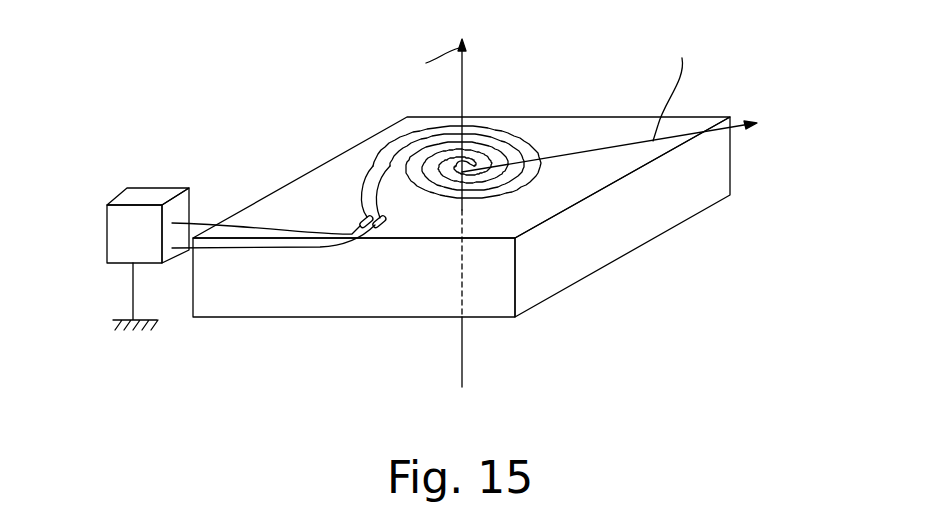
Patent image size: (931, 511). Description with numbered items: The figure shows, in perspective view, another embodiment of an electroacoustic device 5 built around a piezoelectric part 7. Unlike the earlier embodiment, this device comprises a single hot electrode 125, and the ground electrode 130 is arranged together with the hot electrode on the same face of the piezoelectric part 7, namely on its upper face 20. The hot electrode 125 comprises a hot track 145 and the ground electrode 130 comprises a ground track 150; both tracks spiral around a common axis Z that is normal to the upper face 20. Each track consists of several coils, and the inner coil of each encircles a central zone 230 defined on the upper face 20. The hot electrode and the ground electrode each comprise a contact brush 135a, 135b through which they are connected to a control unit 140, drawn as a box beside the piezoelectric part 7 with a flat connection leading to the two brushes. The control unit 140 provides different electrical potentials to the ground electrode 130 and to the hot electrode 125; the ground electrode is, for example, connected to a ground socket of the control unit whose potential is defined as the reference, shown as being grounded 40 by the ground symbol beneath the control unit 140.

The electroacoustic device 5 is at (472, 201).
The piezoelectric part 7 is at (695, 185).
The upper face 20 is at (345, 170).
The ground 40 is at (113, 320).
The hot electrode 125 is at (523, 128).
The ground electrode 130 is at (500, 190).
The contact brush 135a is at (360, 217).
The contact brush 135b is at (382, 230).
The control unit 140 is at (138, 197).
The hot track 145 is at (486, 118).
The ground track 150 is at (547, 130).
The central zone 230 is at (451, 172).